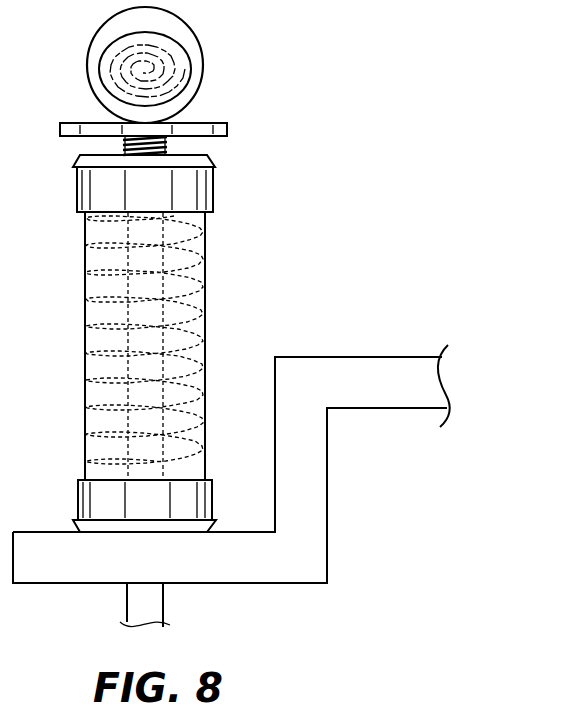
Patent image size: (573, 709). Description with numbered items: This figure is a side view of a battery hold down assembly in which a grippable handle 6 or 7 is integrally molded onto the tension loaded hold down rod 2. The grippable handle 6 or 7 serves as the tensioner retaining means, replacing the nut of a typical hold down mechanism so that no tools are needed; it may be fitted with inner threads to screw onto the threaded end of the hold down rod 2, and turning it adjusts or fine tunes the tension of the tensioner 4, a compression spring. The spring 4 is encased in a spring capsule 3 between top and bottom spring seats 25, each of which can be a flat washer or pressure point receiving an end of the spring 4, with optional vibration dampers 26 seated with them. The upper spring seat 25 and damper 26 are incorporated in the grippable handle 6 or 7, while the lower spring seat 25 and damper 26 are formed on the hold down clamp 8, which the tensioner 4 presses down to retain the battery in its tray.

The hold down rod 2 is at (155, 603).
The spring capsule 3 is at (83, 348).
The tensioner 4 is at (190, 350).
The grippable handle 6 is at (205, 48).
The grippable handle 7 is at (228, 124).
The hold down clamp 8 is at (63, 563).
The spring seat 25 is at (207, 160).
The vibration damper 26 is at (177, 193).